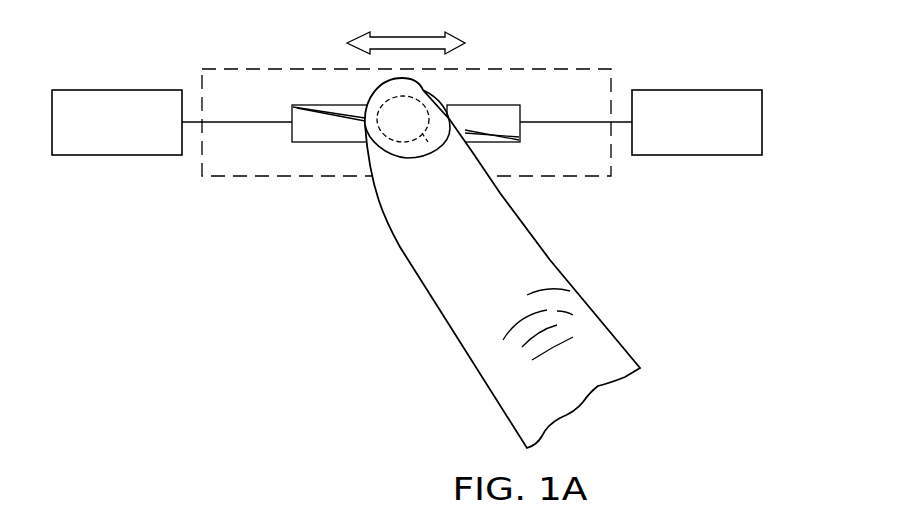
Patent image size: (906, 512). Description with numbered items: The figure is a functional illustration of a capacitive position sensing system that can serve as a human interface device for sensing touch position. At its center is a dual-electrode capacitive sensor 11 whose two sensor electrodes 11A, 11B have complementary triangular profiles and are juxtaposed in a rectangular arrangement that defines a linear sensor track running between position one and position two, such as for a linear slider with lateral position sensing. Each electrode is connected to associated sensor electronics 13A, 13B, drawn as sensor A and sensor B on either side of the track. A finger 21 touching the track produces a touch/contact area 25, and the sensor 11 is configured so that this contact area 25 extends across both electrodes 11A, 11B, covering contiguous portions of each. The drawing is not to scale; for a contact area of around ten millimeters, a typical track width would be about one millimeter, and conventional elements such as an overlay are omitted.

The sensor electronics 13A is at (121, 90).
The sensor electronics 13B is at (698, 90).
The capacitive sensor 11 is at (309, 180).
The sensor electrode 11A is at (292, 107).
The sensor electrode 11B is at (522, 107).
The finger 21 is at (427, 238).
The touch/contact area 25 is at (428, 160).